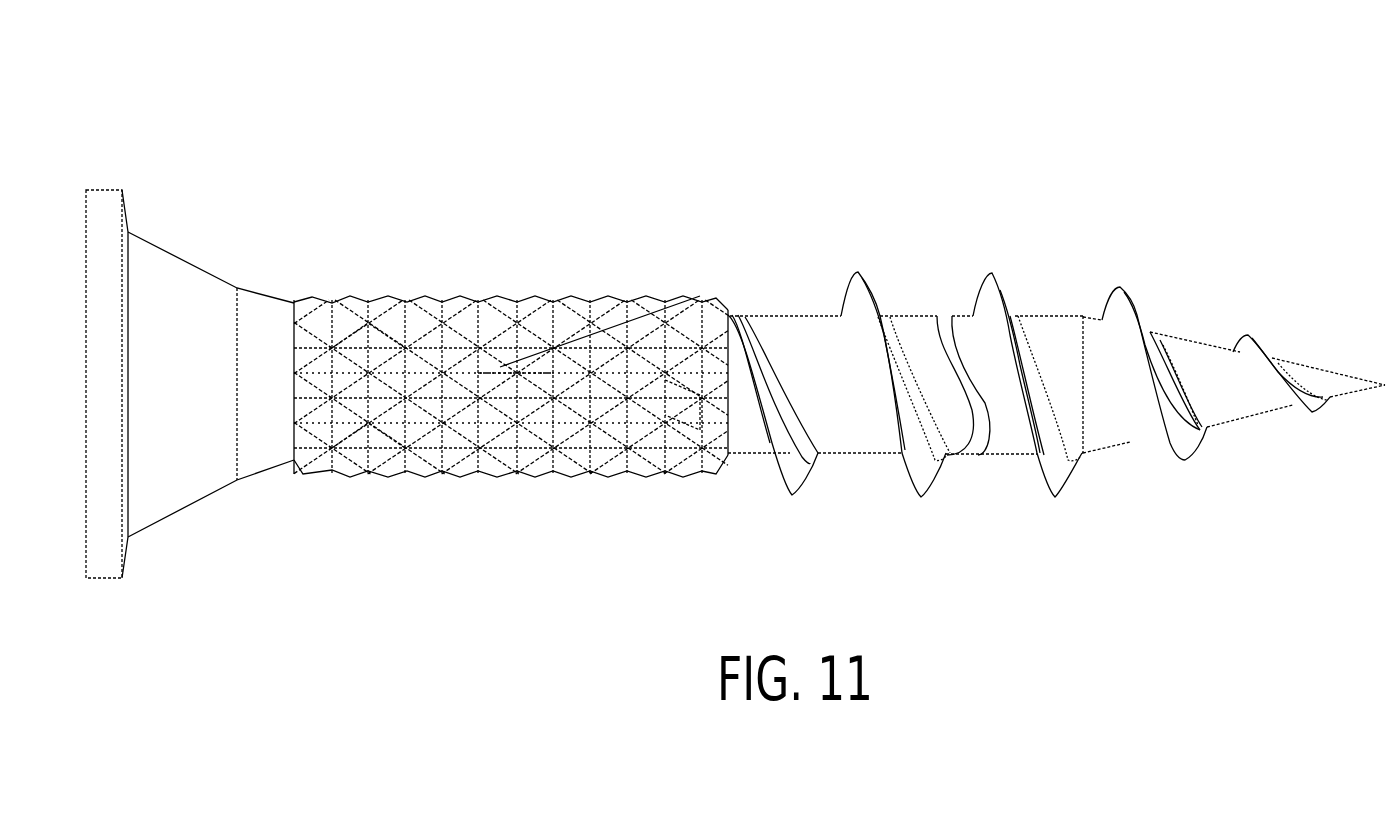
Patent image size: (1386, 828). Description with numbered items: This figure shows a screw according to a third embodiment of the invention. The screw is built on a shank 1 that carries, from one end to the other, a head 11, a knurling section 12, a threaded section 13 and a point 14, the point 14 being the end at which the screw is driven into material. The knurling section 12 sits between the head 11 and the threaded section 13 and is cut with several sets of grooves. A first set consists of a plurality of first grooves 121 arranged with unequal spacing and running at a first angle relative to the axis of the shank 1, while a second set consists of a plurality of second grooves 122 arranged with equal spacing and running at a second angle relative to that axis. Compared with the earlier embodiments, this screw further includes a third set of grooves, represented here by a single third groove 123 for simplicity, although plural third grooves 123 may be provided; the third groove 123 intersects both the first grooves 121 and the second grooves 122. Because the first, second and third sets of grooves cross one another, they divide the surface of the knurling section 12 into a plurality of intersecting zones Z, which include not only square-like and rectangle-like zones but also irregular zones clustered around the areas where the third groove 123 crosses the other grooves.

The shank 1 is at (694, 148).
The head 11 is at (106, 198).
The knurling section 12 is at (311, 257).
The first grooves 121 is at (344, 345).
The second grooves 122 is at (360, 430).
The third groove 123 is at (500, 370).
The intersecting zones Z is at (672, 305).
The threaded section 13 is at (973, 315).
The point 14 is at (1345, 374).